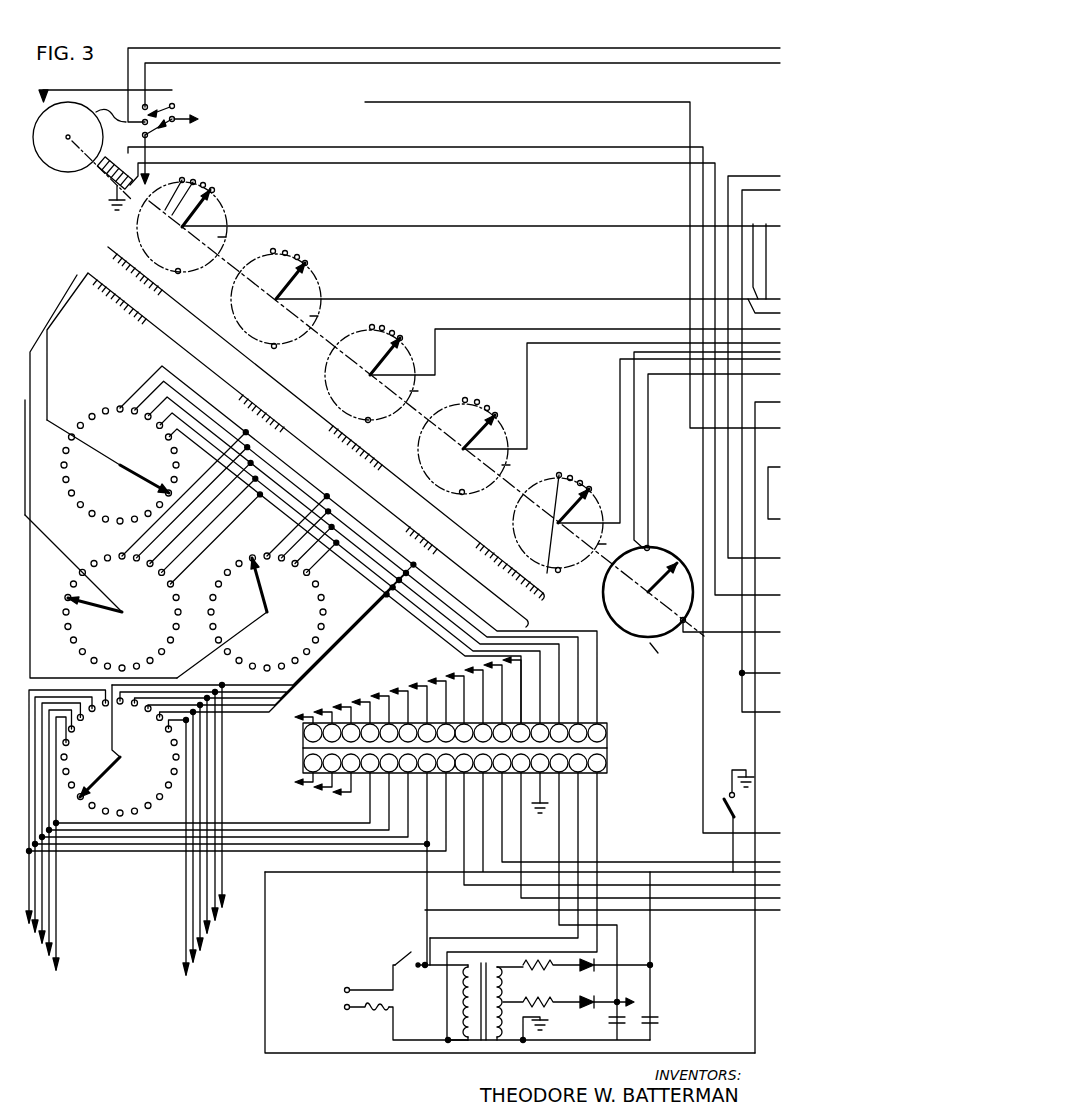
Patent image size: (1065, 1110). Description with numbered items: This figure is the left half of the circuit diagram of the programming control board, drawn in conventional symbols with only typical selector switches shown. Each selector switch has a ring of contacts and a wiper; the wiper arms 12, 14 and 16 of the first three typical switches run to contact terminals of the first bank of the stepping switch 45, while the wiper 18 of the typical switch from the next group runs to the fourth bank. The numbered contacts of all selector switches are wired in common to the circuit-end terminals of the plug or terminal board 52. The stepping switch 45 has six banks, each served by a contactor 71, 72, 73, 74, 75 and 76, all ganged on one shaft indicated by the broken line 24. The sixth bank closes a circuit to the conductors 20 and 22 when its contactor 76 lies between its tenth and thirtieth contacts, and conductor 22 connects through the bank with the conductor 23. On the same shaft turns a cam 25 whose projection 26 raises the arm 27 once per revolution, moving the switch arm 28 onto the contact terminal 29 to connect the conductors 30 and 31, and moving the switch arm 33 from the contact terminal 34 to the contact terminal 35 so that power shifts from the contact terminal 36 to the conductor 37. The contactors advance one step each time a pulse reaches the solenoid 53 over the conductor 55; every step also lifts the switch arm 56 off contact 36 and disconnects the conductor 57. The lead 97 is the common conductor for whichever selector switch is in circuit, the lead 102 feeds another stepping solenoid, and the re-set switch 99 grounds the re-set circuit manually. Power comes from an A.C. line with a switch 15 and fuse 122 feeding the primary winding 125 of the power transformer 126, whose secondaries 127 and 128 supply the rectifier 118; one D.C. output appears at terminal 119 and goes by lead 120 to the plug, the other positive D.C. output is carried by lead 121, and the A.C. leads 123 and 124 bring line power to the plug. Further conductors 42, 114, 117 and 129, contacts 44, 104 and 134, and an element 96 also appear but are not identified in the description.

The wiper arm 12 is at (132, 482).
The wiper arm 14 is at (368, 422).
The switch 15 is at (404, 958).
The wiper arm 16 is at (258, 587).
The wiper 18 is at (98, 764).
The conductor 20 is at (641, 445).
The conductor 22 is at (650, 468).
The conductor 23 is at (730, 614).
The shaft 24 is at (244, 556).
The cam disc 25 is at (40, 164).
The projection 26 is at (133, 107).
The arm 27 is at (86, 88).
The switch arm 28 is at (174, 105).
The contact terminal 29 is at (145, 94).
The conductor 30 is at (362, 106).
The conductor 31 is at (309, 66).
The switch arm 33 is at (162, 127).
The contact terminal 34 is at (142, 140).
The contact terminal 35 is at (142, 124).
The contact terminal 36 is at (156, 159).
The conductor 37 is at (242, 48).
The conductor 42 is at (768, 405).
The off-normal contact 44 is at (270, 355).
The stepping switch 45 is at (378, 278).
The plug or terminal board 52 is at (607, 742).
The solenoid 53 is at (98, 188).
The conductor 55 is at (430, 146).
The switch arm 56 is at (114, 214).
The conductor 57 is at (432, 162).
The contactor 71 is at (216, 194).
The contactor 72 is at (310, 269).
The contactor 73 is at (406, 340).
The contactor 74 is at (500, 416).
The contactor 75 is at (589, 485).
The contactor 76 is at (664, 555).
The power supply 96 is at (740, 1053).
The lead 97 is at (763, 920).
The re-set switch 99 is at (720, 806).
The lead 102 is at (760, 186).
The contact 104 is at (464, 501).
The conductor 114 is at (757, 175).
The conductor 117 is at (777, 493).
The rectifier 118 is at (552, 1020).
The terminal 119 is at (652, 965).
The lead 120 is at (636, 862).
The lead 121 is at (568, 834).
The fuse 122 is at (368, 1010).
The A.C. lead 123 is at (586, 796).
The A.C. lead 124 is at (590, 808).
The primary winding 125 is at (630, 223).
The power transformer 126 is at (602, 299).
The secondary 127 is at (561, 330).
The secondary 128 is at (556, 352).
The conductor 129 is at (620, 399).
The contact 134 is at (560, 579).